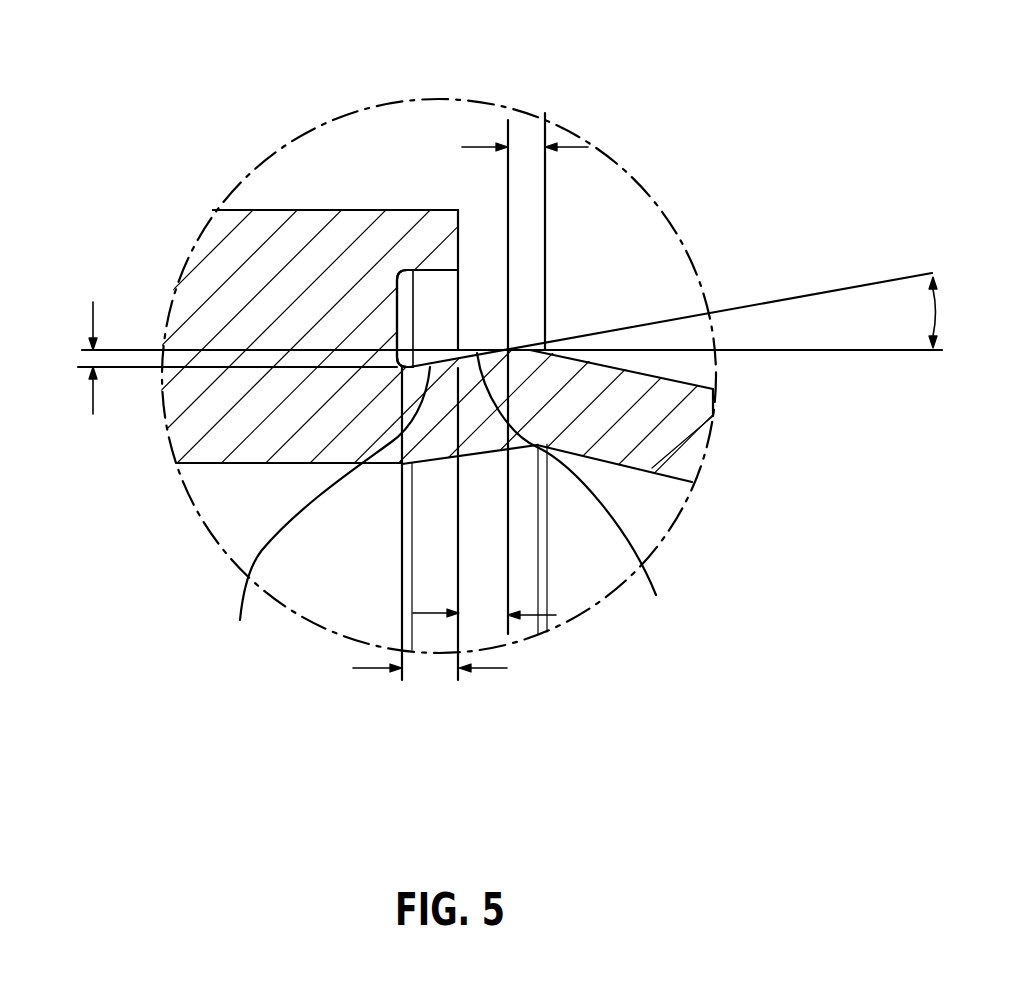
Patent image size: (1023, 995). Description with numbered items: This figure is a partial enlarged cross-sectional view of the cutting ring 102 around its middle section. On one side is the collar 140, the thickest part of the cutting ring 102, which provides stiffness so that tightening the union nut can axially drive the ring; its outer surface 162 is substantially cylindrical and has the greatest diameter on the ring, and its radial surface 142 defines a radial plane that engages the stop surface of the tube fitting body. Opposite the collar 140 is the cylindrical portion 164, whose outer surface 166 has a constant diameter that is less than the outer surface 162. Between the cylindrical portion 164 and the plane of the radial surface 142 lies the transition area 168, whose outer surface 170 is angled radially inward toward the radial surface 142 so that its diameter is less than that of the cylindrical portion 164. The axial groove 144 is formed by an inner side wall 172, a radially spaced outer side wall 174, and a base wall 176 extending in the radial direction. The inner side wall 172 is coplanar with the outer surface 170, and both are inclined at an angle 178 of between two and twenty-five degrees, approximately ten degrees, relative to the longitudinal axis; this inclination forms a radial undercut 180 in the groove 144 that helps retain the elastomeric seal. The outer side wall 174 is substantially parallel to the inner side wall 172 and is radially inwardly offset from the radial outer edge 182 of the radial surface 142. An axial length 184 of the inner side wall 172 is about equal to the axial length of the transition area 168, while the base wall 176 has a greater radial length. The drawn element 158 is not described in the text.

The cutting ring 102 is at (710, 50).
The collar 140 is at (245, 209).
The radial surface 142 is at (472, 228).
The axial groove 144 is at (277, 200).
The flange 158 is at (642, 354).
The outer surface 162 is at (340, 212).
The cylindrical portion 164 is at (567, 148).
The outer surface 166 is at (542, 334).
The transition area 168 is at (528, 615).
The outer surface 170 is at (576, 490).
The inner side wall 172 is at (326, 506).
The outer side wall 174 is at (420, 313).
The base wall 176 is at (395, 318).
The angle 178 is at (934, 300).
The radial undercut 180 is at (93, 392).
The radial outer edge 182 is at (437, 268).
The axial length 184 is at (480, 668).